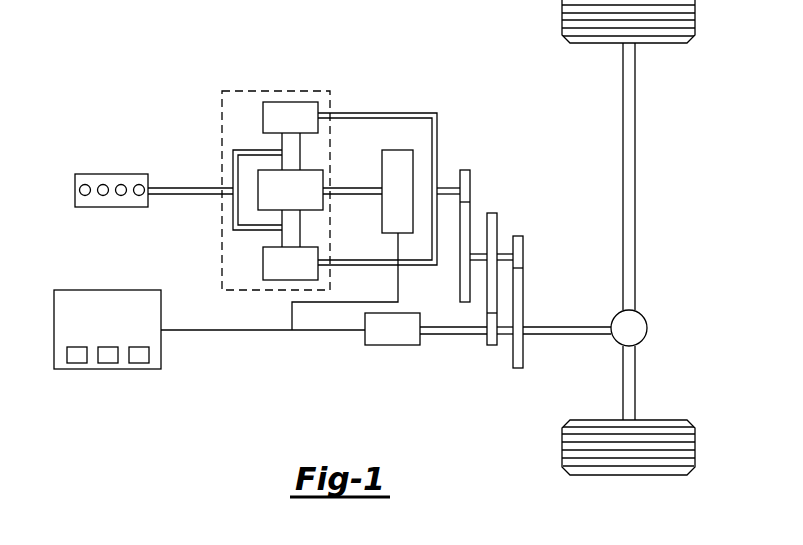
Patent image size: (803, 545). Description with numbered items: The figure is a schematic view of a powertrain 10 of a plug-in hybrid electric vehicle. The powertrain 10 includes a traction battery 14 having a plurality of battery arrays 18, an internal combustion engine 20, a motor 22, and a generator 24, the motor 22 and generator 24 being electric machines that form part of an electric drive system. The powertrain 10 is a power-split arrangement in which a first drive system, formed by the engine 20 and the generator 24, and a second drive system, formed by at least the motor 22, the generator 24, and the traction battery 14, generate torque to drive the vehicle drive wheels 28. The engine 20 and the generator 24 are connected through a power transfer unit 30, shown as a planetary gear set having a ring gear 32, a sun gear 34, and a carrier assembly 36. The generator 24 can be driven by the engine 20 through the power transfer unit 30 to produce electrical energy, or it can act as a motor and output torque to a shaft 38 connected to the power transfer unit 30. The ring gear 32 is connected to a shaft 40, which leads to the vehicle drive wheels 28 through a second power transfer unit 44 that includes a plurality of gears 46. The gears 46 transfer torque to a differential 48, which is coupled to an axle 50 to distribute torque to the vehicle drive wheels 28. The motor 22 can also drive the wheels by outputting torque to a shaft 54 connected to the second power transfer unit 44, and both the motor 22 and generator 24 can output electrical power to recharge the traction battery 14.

The powertrain 10 is at (136, 61).
The traction battery 14 is at (107, 290).
The battery arrays 18 is at (108, 369).
The internal combustion engine 20 is at (76, 175).
The motor 22 is at (393, 345).
The generator 24 is at (413, 160).
The vehicle drive wheels 28 is at (695, 18).
The power transfer unit 30 is at (331, 93).
The ring gear 32 is at (263, 118).
The sun gear 34 is at (313, 210).
The carrier assembly 36 is at (233, 173).
The shaft 38 is at (356, 187).
The shaft 40 is at (447, 197).
The second power transfer unit 44 is at (542, 181).
The gears 46 is at (470, 183).
The differential 48 is at (647, 328).
The axle 50 is at (636, 178).
The shaft 54 is at (455, 336).